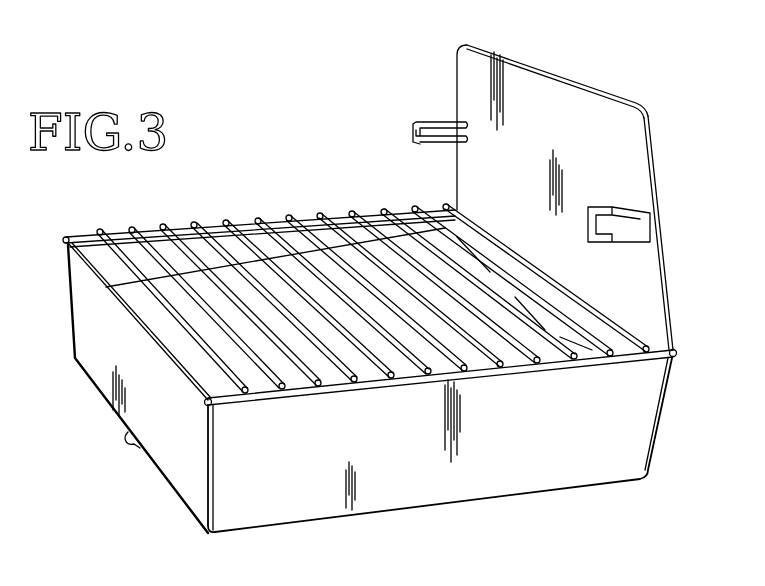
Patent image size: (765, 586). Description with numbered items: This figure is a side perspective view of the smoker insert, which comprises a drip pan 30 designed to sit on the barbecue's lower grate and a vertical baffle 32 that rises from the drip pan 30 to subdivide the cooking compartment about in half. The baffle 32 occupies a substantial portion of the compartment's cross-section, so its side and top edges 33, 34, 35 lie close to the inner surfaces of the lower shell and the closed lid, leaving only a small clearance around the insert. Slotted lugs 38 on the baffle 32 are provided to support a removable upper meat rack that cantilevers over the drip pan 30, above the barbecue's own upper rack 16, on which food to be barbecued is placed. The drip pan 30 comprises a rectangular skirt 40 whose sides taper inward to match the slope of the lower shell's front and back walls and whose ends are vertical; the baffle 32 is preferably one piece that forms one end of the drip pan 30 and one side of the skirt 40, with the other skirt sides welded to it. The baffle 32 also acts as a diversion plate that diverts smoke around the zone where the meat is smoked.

The upper rack 16 is at (173, 318).
The drip pan 30 is at (370, 390).
The vertical baffle 32 is at (565, 197).
The side edge of baffle 33 is at (665, 265).
The top edge of baffle 34 is at (608, 90).
The side edge of baffle 35 is at (462, 72).
The slotted lugs 38 is at (440, 143).
The rectangular skirt 40 is at (278, 506).